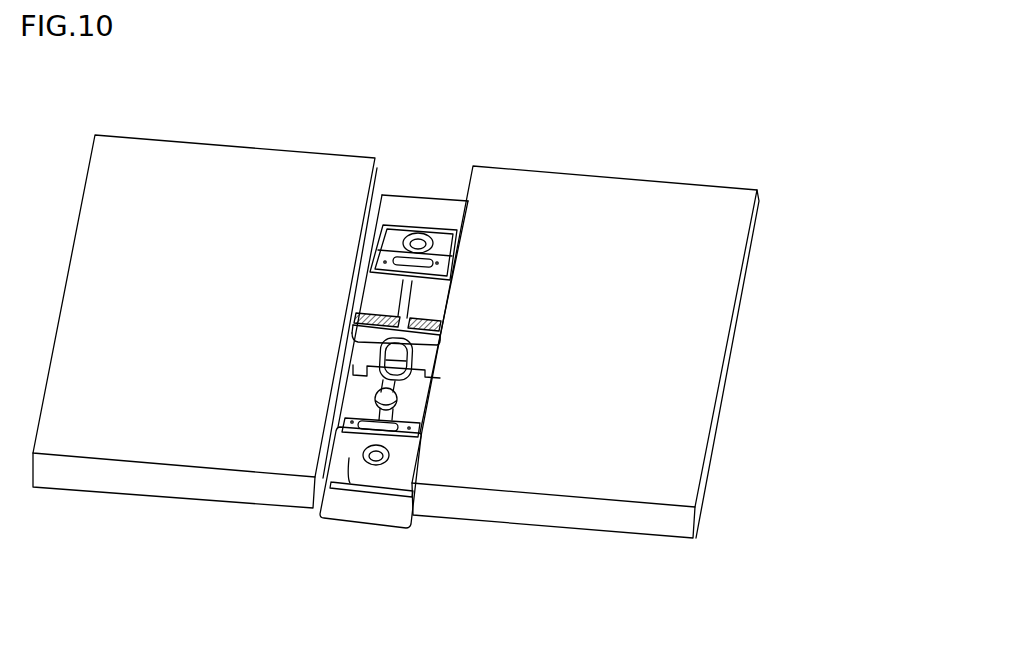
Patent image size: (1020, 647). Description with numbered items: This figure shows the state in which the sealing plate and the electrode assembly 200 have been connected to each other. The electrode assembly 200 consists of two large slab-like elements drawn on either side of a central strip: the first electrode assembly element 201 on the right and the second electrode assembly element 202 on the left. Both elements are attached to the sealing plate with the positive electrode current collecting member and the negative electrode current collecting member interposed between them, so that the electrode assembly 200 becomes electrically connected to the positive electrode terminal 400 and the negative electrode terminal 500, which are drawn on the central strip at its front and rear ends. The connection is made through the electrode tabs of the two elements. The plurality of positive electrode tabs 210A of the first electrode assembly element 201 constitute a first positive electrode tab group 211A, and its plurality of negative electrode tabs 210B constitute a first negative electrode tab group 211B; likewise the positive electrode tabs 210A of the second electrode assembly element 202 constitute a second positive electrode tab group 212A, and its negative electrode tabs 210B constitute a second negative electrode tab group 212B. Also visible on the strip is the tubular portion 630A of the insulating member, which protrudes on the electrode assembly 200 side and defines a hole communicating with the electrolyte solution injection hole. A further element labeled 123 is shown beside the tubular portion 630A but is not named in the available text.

The electrode assembly 200 is at (542, 78).
The first electrode assembly element 201 is at (520, 197).
The second electrode assembly element 202 is at (302, 180).
The negative electrode terminal 500 is at (418, 247).
The hinge shaft guide 123 is at (395, 352).
The tubular portion 630A is at (397, 392).
The positive electrode terminal 400 is at (365, 453).
The second negative electrode tab group 212B is at (383, 288).
The first negative electrode tab group 211B is at (422, 305).
The negative electrode tabs 210B is at (307, 560).
The second positive electrode tab group 212A is at (363, 407).
The first positive electrode tab group 211A is at (405, 408).
The positive electrode tabs 210A is at (530, 576).